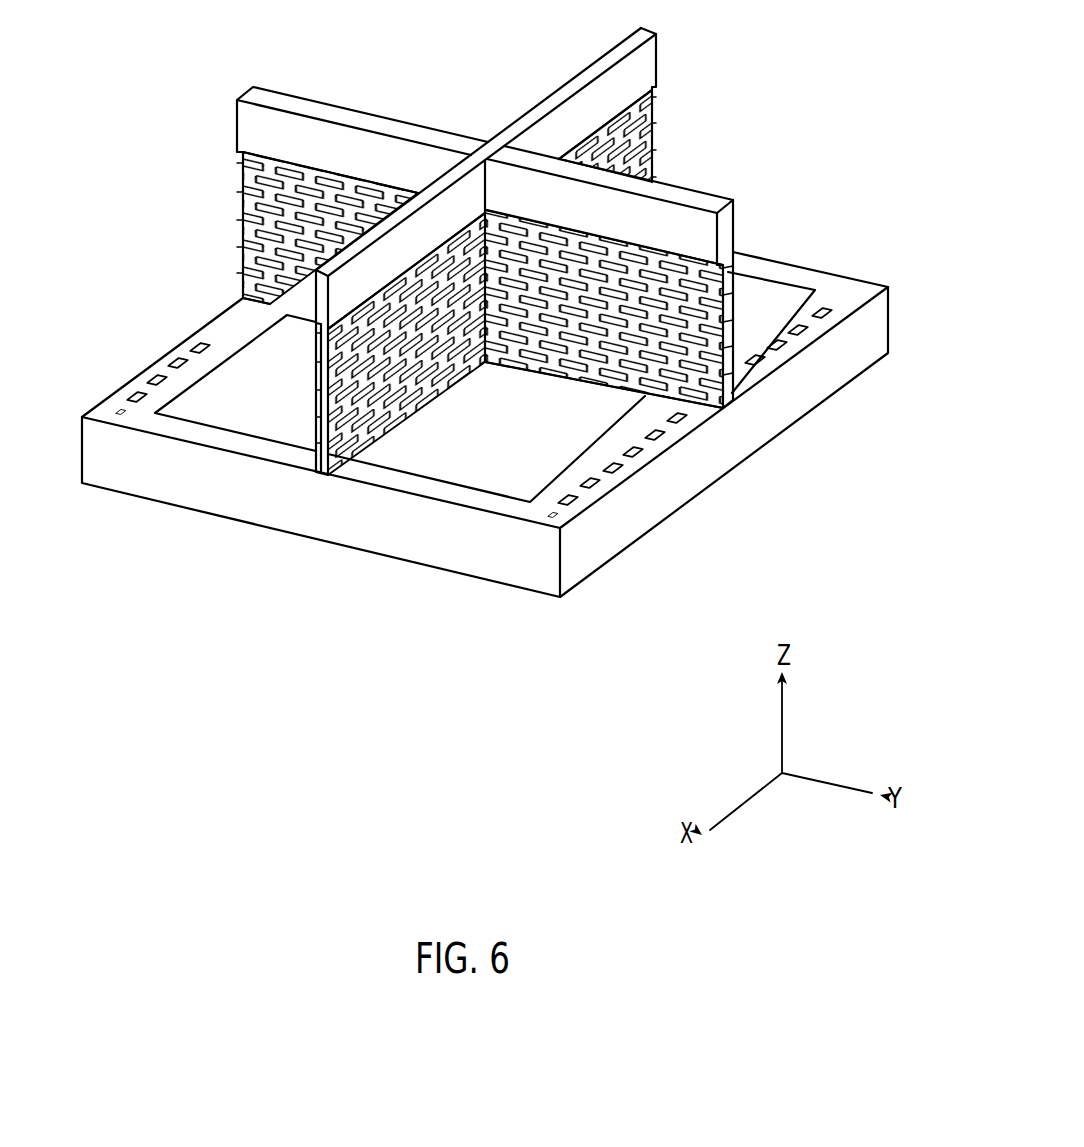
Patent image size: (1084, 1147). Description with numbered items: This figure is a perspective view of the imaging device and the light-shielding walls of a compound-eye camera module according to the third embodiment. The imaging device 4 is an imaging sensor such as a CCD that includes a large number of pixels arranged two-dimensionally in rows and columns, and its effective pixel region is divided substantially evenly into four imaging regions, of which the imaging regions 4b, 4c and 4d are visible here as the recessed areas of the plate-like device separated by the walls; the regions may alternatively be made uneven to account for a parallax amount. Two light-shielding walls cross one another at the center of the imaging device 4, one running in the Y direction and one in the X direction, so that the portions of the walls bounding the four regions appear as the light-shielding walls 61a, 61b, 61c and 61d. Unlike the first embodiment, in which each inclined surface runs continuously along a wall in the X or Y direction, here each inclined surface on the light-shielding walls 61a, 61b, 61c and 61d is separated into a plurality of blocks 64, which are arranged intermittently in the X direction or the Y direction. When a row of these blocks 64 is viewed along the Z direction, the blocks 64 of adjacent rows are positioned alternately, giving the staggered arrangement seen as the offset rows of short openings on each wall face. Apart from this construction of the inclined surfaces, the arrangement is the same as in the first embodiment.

The imaging device 4 is at (825, 383).
The imaging region 4b is at (785, 290).
The imaging region 4c is at (250, 407).
The imaging region 4d is at (492, 465).
The light-shielding wall 61a is at (615, 137).
The light-shielding wall 61b is at (333, 197).
The light-shielding wall 61c is at (443, 287).
The light-shielding wall 61d is at (612, 252).
The block 64 is at (647, 378).